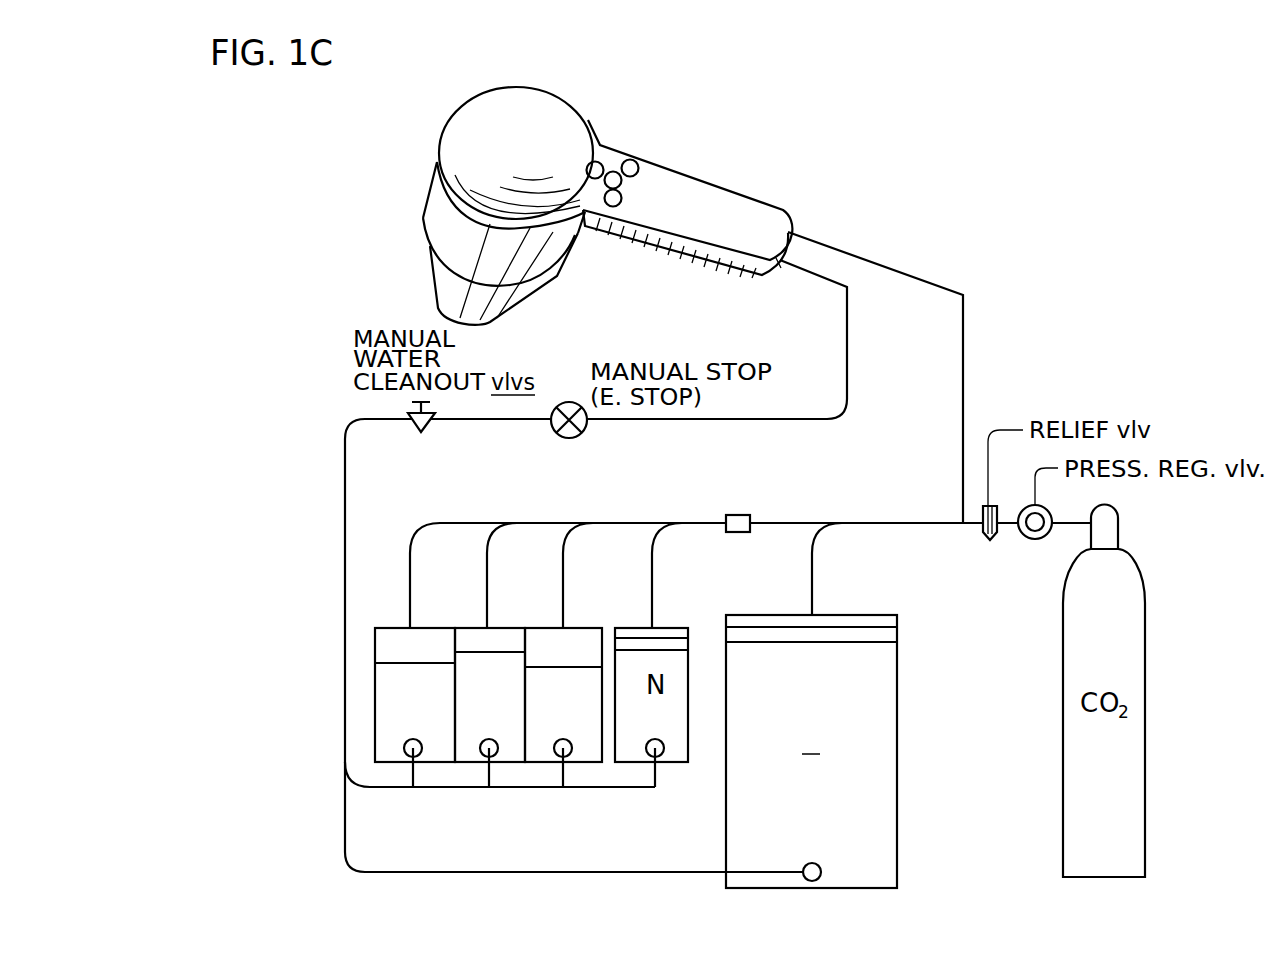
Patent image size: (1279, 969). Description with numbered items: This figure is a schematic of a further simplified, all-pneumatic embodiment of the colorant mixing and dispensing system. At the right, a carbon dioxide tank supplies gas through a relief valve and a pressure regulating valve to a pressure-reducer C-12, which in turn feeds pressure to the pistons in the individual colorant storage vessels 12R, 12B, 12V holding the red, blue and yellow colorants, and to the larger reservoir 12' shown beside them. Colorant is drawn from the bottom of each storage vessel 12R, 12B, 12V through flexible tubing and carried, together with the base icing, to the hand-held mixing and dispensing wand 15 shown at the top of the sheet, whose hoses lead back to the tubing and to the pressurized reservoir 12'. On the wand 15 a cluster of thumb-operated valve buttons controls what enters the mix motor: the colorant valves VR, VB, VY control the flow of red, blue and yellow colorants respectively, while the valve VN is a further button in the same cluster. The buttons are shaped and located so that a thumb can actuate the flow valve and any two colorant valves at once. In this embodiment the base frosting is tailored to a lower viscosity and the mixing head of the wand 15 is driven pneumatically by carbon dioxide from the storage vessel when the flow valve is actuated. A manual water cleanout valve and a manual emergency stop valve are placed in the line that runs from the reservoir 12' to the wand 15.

The mixing and dispensing wand 15 is at (416, 164).
The red ink tank 12R is at (420, 662).
The blue ink tank 12B is at (503, 650).
The violet ink tank 12V is at (567, 660).
The B ink reservoir tank 12' is at (818, 705).
The pressure-reducer C-12 is at (737, 516).
The blue colorant valve VB is at (590, 161).
The N valve VN is at (614, 171).
The red colorant valve VR is at (638, 163).
The yellow colorant valve VY is at (609, 207).